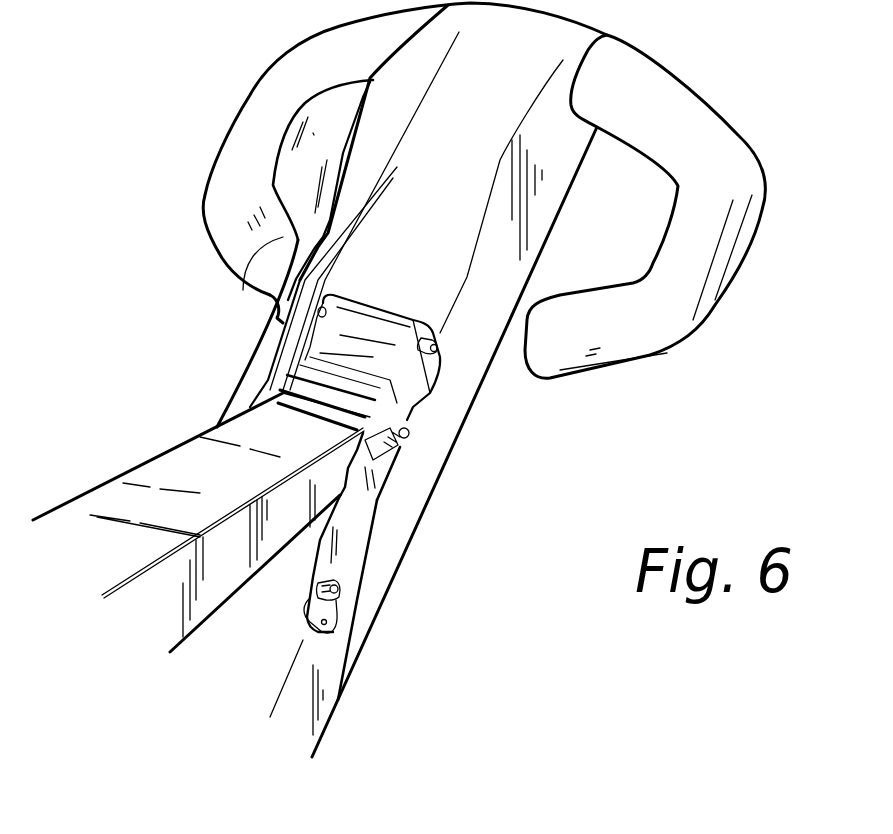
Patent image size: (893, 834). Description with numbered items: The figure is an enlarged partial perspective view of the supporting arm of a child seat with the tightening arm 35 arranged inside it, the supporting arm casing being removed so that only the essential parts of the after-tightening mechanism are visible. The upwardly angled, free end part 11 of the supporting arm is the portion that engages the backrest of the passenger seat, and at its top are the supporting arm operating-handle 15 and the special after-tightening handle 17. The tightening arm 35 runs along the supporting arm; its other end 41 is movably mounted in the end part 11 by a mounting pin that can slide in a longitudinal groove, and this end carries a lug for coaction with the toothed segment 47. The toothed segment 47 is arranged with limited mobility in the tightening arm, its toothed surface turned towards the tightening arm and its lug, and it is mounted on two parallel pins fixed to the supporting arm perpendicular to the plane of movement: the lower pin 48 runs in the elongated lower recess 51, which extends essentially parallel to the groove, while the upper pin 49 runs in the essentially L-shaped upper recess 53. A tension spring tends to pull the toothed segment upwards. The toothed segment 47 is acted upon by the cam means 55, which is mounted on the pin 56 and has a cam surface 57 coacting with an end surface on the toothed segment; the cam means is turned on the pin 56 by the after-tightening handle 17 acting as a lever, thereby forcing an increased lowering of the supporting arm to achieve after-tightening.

The end part 11 is at (427, 485).
The supporting arm operating-handle 15 is at (702, 300).
The after-tightening handle 17 is at (307, 147).
The tightening arm 35 is at (105, 500).
The other end of the tightening arm 41 is at (263, 430).
The toothed segment 47 is at (360, 517).
The lower pin 48 is at (340, 588).
The upper pin 49 is at (412, 433).
The lower recess 51 is at (307, 630).
The upper recess 53 is at (390, 450).
The cam means 55 is at (412, 378).
The pin 56 is at (440, 343).
The cam surface 57 is at (320, 345).